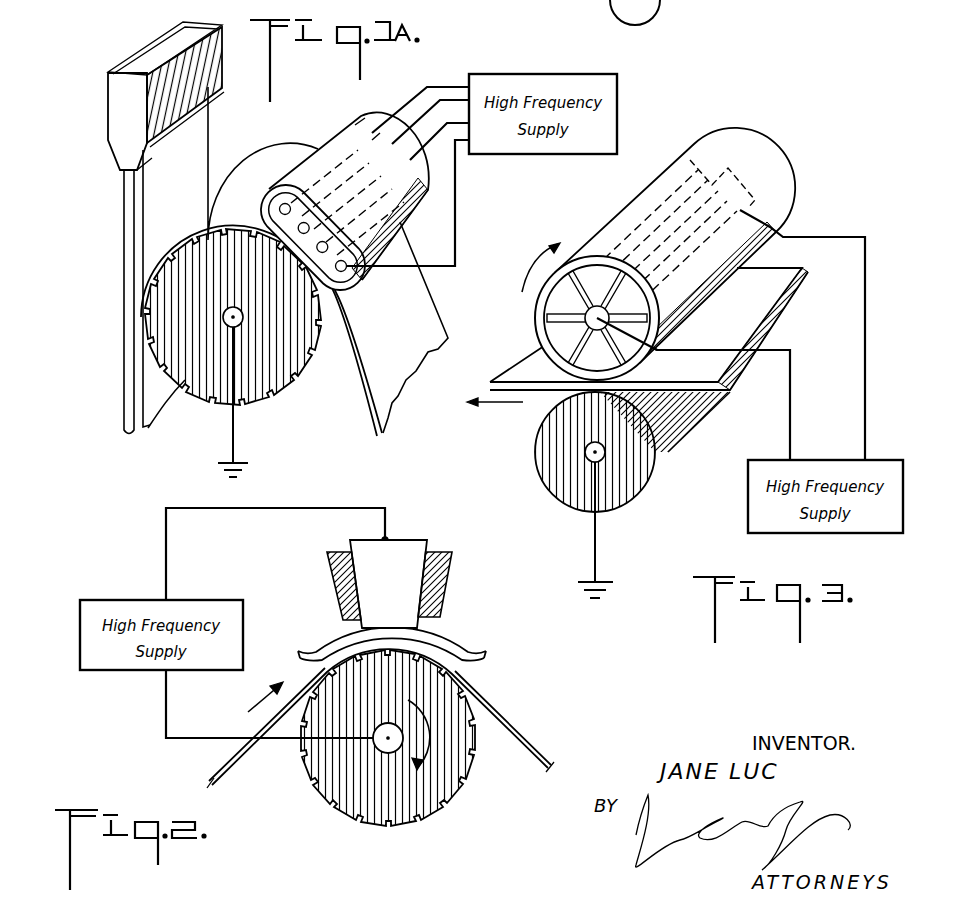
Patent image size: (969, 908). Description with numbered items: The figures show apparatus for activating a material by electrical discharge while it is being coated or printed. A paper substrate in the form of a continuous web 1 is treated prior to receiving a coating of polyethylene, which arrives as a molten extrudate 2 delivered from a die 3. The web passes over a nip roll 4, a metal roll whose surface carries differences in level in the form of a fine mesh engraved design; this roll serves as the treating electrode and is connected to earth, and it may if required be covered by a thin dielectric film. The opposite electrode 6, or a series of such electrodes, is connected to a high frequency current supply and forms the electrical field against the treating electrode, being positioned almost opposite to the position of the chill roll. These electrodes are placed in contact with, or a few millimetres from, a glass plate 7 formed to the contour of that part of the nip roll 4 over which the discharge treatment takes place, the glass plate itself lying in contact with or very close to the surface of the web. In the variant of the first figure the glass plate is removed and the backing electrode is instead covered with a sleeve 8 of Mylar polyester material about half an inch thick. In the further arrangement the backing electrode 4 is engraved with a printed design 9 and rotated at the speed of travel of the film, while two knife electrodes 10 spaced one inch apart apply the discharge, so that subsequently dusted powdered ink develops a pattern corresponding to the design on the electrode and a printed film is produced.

In FIG. 1A, the continuous web 1 is at (423, 306).
In FIG. 3, the continuous web 1 is at (780, 287).
In FIG. 2, the continuous web 1 is at (510, 720).
In FIG. 1A, the molten extrudate 2 is at (122, 237).
In FIG. 1A, the die 3 is at (120, 123).
In FIG. 1A, the nip roll 4 is at (273, 378).
In FIG. 3, the nip roll 4 is at (555, 477).
In FIG. 2, the nip roll 4 is at (366, 759).
In FIG. 1A, the opposite electrode 6 is at (306, 228).
In FIG. 3, the opposite electrode 6 is at (557, 308).
In FIG. 3, the glass plate 7 is at (603, 222).
In FIG. 2, the glass plate 7 is at (457, 647).
In FIG. 1A, the sleeve 8 is at (352, 325).
In FIG. 2, the printed design 9 is at (308, 779).
In FIG. 2, the knife electrodes 10 is at (331, 585).